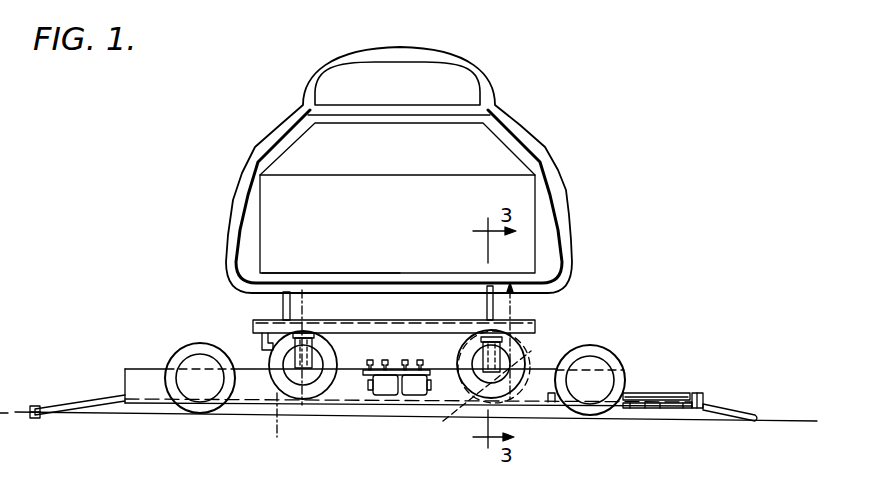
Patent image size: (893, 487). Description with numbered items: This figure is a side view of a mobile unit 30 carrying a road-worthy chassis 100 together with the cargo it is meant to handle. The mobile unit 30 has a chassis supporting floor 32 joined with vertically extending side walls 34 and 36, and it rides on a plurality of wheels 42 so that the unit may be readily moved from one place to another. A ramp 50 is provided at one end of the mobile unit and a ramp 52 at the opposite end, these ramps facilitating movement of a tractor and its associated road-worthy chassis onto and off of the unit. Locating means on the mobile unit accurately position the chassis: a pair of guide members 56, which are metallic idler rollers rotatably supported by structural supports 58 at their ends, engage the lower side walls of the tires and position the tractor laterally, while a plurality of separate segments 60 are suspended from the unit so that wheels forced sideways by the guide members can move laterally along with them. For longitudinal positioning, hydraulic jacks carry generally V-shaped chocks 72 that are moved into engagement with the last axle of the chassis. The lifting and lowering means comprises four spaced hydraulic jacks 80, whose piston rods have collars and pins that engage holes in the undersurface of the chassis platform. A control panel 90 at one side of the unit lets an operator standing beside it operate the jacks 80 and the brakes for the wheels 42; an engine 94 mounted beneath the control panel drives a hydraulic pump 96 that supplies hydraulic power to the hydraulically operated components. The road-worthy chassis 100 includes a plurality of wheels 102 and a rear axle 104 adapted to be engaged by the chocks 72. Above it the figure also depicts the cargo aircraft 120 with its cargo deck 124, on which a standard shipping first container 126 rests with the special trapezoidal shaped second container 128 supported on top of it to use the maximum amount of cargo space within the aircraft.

The mobile unit 30 is at (255, 403).
The chassis supporting floor 32 is at (279, 426).
The side wall 34 is at (37, 406).
The side wall 36 is at (350, 383).
The wheels 42 is at (173, 352).
The ramp 50 is at (727, 417).
The ramp 52 is at (87, 414).
The guide members 56 is at (660, 393).
The structural supports 58 is at (621, 393).
The segments 60 is at (627, 410).
The V-shaped chocks 72 is at (523, 358).
The hydraulic jacks 80 is at (312, 345).
The control panel 90 is at (391, 370).
The engine 94 is at (412, 386).
The hydraulic pump 96 is at (388, 386).
The road-worthy chassis 100 is at (541, 318).
The wheels 102 is at (268, 367).
The rear axle 104 is at (481, 399).
The cargo aircraft 120 is at (532, 129).
The cargo deck 124 is at (330, 273).
The first container 126 is at (420, 230).
The second container 128 is at (417, 158).